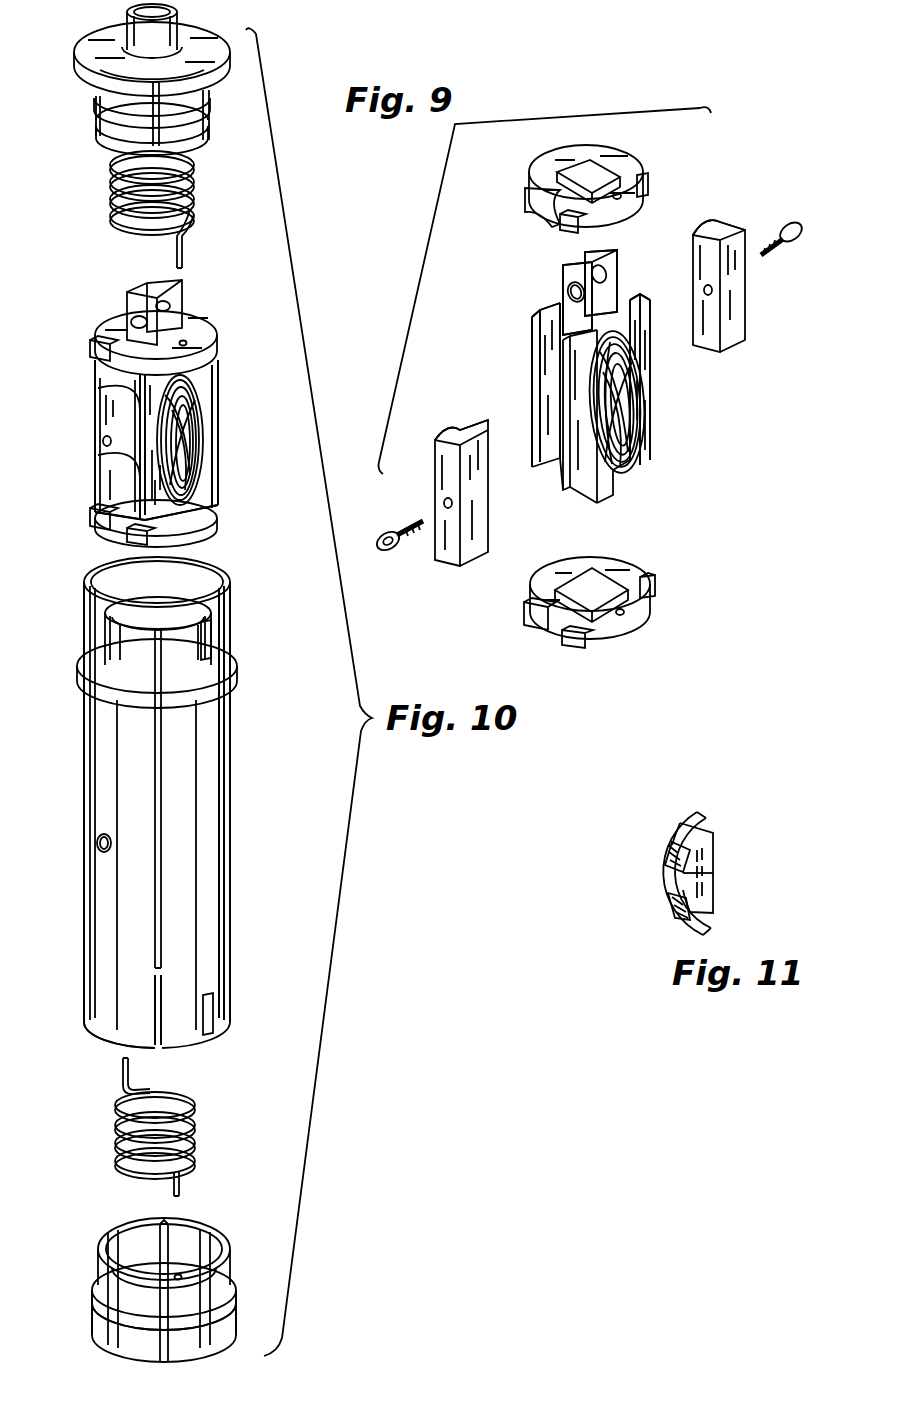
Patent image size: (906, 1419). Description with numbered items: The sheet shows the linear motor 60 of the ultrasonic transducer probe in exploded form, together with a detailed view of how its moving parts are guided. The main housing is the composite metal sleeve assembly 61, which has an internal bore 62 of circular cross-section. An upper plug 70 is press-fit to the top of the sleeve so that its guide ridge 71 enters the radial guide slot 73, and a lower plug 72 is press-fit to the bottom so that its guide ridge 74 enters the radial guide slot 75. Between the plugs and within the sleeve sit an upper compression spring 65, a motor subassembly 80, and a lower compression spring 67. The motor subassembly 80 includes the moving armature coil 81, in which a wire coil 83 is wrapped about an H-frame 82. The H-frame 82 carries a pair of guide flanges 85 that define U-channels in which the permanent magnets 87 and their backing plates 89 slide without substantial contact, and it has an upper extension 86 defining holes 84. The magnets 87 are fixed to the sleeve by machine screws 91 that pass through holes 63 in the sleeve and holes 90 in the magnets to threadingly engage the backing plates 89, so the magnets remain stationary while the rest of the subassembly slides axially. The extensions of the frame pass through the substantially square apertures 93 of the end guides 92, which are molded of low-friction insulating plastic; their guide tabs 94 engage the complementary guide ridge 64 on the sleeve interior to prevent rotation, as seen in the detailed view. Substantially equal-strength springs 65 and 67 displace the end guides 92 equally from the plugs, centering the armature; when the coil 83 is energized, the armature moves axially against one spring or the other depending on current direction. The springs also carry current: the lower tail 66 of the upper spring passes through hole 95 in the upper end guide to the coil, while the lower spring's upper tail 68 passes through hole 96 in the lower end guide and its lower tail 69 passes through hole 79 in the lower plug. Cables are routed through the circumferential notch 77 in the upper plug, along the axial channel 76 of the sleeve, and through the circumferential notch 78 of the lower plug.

In FIG. 10, the linear motor 60 is at (231, 791).
In FIG. 10, the composite metal sleeve assembly 61 is at (213, 860).
In FIG. 11, the composite metal sleeve assembly 61 is at (690, 812).
In FIG. 10, the bore 62 is at (168, 612).
In FIG. 10, the holes 63 is at (97, 843).
In FIG. 11, the guide ridge 64 is at (712, 873).
In FIG. 10, the upper compression spring 65 is at (197, 197).
In FIG. 10, the lower tail 66 is at (183, 249).
In FIG. 10, the lower compression spring 67 is at (197, 1132).
In FIG. 10, the upper tail 68 is at (120, 1072).
In FIG. 10, the lower tail 69 is at (180, 1185).
In FIG. 10, the upper plug 70 is at (88, 45).
In FIG. 10, the guide ridge 71 is at (208, 133).
In FIG. 10, the lower plug 72 is at (107, 1303).
In FIG. 10, the radial guide slot 73 is at (207, 634).
In FIG. 10, the guide ridge 74 is at (217, 1307).
In FIG. 10, the radial guide slot 75 is at (213, 1030).
In FIG. 10, the axial channel 76 is at (160, 1010).
In FIG. 10, the circumferential notch 77 is at (152, 123).
In FIG. 10, the circumferential notch 78 is at (160, 1308).
In FIG. 10, the hole 79 is at (180, 1276).
In FIG. 10, the motor subassembly 80 is at (216, 447).
In FIG. 9, the motor subassembly 80 is at (728, 469).
In FIG. 10, the moving armature coil 81 is at (215, 415).
In FIG. 9, the moving armature coil 81 is at (653, 400).
In FIG. 9, the H-frame 82 is at (640, 333).
In FIG. 10, the wire coil 83 is at (200, 412).
In FIG. 9, the wire coil 83 is at (648, 428).
In FIG. 9, the holes 84 is at (563, 290).
In FIG. 9, the guide flanges 85 is at (622, 290).
In FIG. 10, the upper extension 86 is at (184, 308).
In FIG. 9, the upper extension 86 is at (565, 268).
In FIG. 10, the permanent magnets 87 is at (100, 450).
In FIG. 9, the permanent magnets 87 is at (745, 310).
In FIG. 9, the backing plates 89 is at (707, 231).
In FIG. 9, the holes 90 is at (705, 289).
In FIG. 9, the machine screws 91 is at (785, 244).
In FIG. 10, the end guides 92 is at (115, 312).
In FIG. 9, the end guides 92 is at (535, 168).
In FIG. 11, the end guides 92 is at (710, 900).
In FIG. 9, the square apertures 93 is at (570, 170).
In FIG. 10, the guide tabs 94 is at (96, 368).
In FIG. 9, the guide tabs 94 is at (557, 220).
In FIG. 11, the guide tabs 94 is at (670, 840).
In FIG. 9, the hole 95 is at (628, 196).
In FIG. 10, the hole 96 is at (187, 342).
In FIG. 9, the hole 96 is at (633, 608).